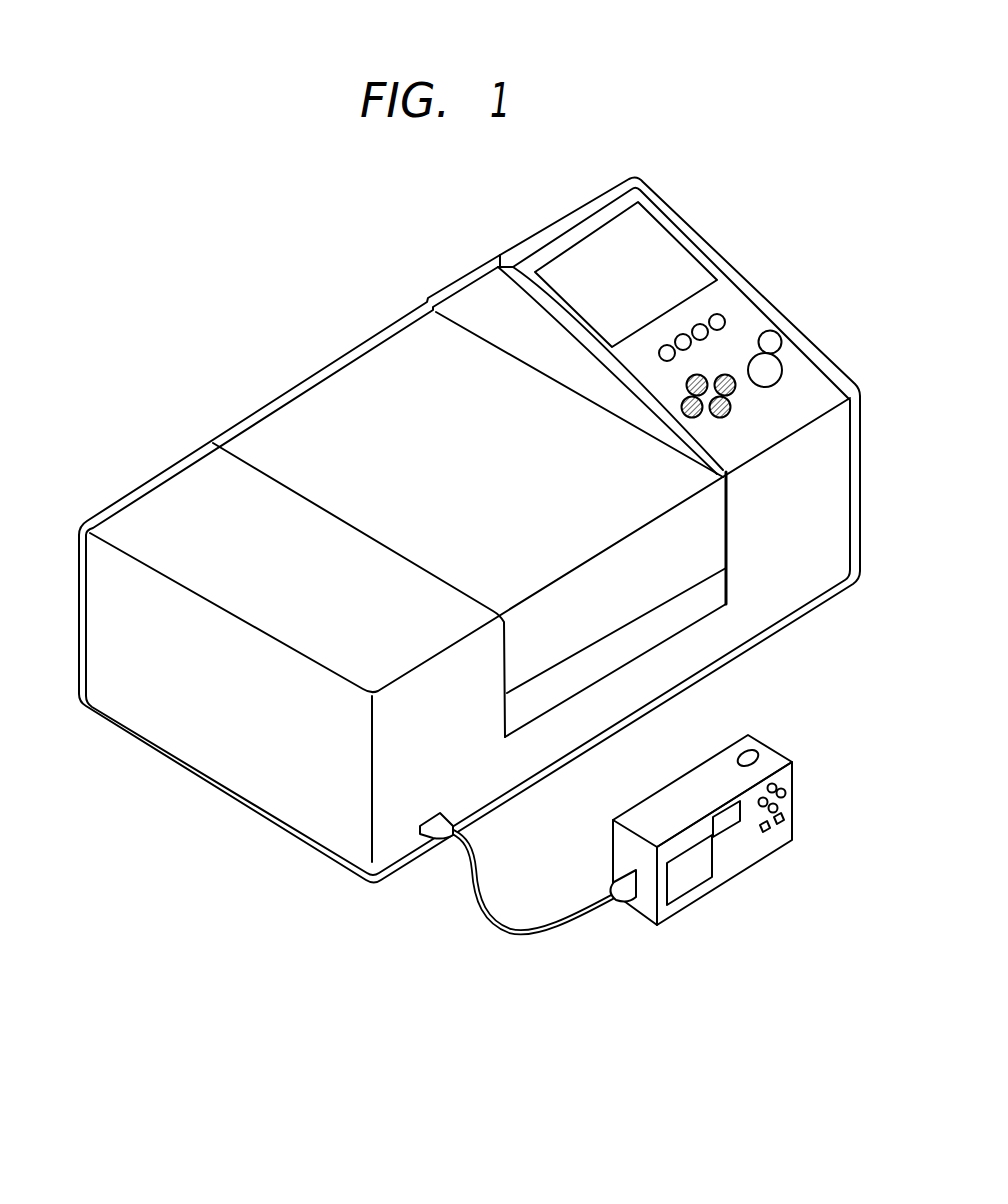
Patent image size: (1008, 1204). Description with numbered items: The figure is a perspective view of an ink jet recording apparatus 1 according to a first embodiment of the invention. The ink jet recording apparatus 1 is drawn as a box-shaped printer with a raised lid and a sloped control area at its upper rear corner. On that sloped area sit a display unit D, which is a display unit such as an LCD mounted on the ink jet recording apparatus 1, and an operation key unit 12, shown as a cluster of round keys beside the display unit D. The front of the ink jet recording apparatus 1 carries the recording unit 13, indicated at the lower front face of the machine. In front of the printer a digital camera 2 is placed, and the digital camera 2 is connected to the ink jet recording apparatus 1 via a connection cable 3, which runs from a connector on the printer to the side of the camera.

The ink jet recording apparatus 1 is at (297, 430).
The digital camera 2 is at (737, 853).
The connection cable 3 is at (530, 937).
The operation key unit 12 is at (738, 340).
The recording unit 13 is at (658, 573).
The display unit D is at (657, 250).